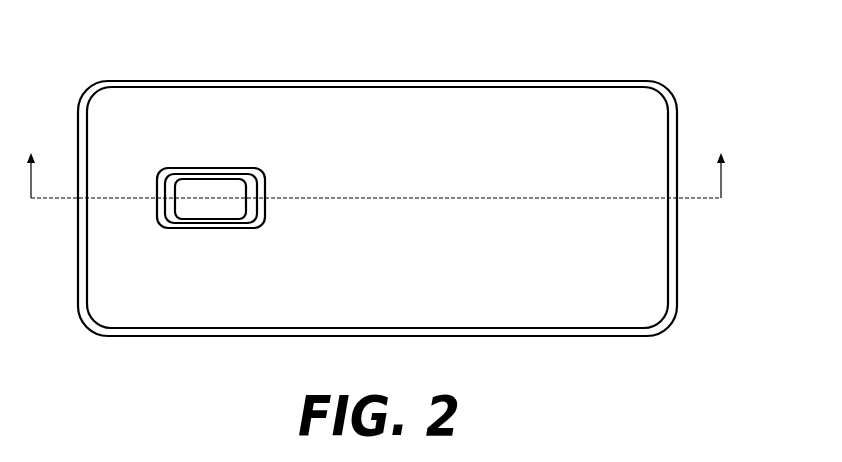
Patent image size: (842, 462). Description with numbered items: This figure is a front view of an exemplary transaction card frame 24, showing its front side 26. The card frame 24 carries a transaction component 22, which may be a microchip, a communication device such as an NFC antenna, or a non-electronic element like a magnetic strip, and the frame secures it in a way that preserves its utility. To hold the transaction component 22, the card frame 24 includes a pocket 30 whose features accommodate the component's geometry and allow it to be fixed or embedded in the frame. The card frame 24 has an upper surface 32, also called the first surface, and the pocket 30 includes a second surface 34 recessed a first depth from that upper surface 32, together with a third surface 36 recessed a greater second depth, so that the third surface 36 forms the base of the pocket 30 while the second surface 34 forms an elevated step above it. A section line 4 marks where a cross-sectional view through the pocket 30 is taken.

The transaction component 22 is at (188, 212).
The transaction card frame 24 is at (298, 81).
The front side 26 is at (498, 249).
The pocket 30 is at (170, 168).
The upper surface 32 is at (195, 292).
The second surface 34 is at (258, 176).
The third surface 36 is at (250, 215).
The section line 4- 4 is at (377, 162).